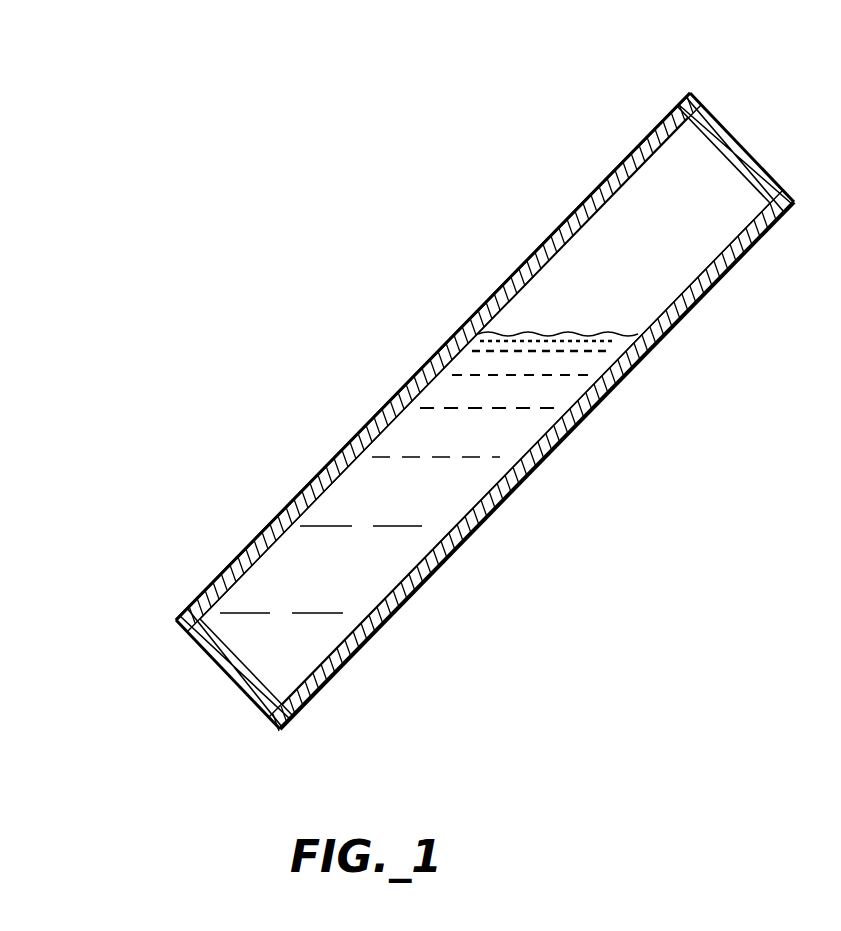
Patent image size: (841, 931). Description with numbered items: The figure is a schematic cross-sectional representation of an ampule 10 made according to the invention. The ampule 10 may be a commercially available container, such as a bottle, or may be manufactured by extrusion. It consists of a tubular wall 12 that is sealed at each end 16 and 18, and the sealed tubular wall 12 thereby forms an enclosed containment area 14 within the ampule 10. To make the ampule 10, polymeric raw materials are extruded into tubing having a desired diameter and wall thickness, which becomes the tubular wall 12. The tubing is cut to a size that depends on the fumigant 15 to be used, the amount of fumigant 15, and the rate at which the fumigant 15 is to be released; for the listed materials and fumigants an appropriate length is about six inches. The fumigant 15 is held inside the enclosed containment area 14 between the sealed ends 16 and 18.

The ampule 10 is at (485, 412).
The tubular wall 12 is at (370, 420).
The enclosed containment area 14 is at (645, 192).
The fumigant 15 is at (504, 467).
The end 16 is at (731, 130).
The end 18 is at (246, 697).